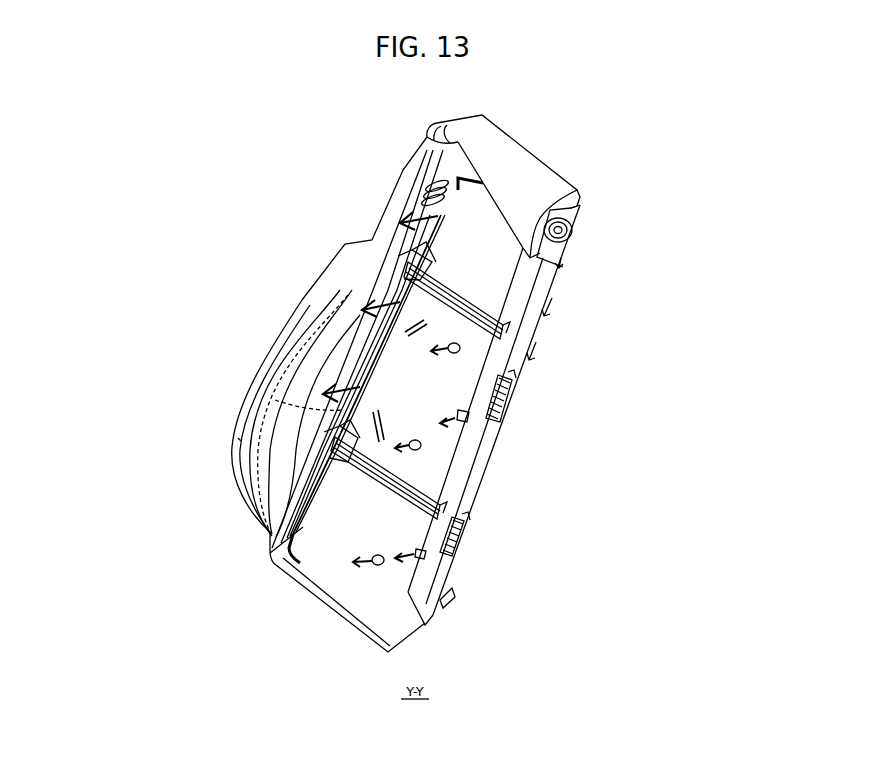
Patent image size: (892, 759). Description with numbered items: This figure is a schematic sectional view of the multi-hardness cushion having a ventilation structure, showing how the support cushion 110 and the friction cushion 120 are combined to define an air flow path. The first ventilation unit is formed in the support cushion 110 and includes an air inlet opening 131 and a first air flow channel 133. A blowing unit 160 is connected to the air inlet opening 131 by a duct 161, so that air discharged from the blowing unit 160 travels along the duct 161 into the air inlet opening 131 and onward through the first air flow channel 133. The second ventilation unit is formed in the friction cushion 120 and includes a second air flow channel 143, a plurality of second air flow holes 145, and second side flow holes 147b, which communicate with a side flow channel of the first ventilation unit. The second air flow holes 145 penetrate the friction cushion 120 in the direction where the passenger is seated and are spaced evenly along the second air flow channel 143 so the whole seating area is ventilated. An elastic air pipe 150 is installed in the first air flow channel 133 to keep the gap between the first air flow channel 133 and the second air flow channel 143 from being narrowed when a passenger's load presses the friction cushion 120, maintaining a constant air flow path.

The 2b side flow hole 147b is at (447, 207).
The blowing unit 160 is at (570, 232).
The duct 161 is at (553, 300).
The second air flow holes 145 is at (460, 348).
The first air flow channel 133 is at (508, 377).
The air inlet opening 131 is at (512, 390).
The second air flow channel 143 is at (500, 405).
The elastic air pipe 150 is at (460, 532).
The support cushion 110 is at (445, 608).
The friction cushion 120 is at (420, 630).